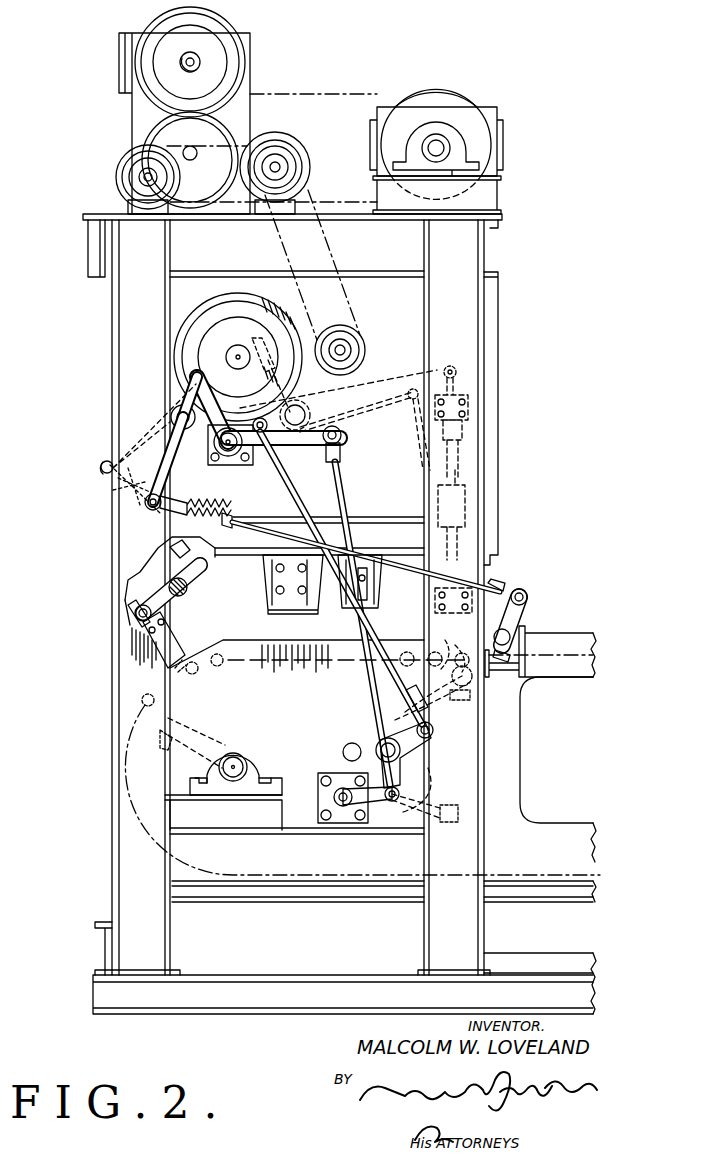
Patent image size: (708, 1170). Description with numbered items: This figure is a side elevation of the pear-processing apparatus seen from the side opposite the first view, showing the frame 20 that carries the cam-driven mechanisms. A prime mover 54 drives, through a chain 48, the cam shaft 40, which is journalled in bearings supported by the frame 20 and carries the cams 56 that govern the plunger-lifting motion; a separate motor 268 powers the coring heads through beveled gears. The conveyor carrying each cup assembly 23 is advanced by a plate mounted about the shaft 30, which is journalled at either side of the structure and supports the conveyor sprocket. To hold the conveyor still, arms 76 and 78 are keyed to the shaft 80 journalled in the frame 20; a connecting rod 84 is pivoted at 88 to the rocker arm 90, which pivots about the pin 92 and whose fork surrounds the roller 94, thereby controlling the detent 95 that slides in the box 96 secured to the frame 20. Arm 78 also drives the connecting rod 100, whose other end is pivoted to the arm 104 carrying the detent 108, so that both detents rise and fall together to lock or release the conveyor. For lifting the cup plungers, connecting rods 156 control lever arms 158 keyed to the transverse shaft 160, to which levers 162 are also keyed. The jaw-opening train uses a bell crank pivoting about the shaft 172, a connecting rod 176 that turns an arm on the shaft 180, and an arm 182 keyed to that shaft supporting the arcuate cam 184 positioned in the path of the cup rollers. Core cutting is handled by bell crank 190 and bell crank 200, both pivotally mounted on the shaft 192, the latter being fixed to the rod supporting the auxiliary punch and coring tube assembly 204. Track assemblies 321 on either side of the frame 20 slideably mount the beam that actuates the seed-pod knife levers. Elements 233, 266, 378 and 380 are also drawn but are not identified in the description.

The frame 20 is at (108, 886).
The cup assembly 23 is at (127, 808).
The shaft 30 is at (240, 764).
The shaft 40 is at (240, 352).
The chain 48 is at (352, 93).
The prime mover 54 is at (130, 58).
The cams 56 is at (216, 305).
The arm 76 is at (143, 435).
The arm 78 is at (168, 462).
The shaft 80 is at (175, 405).
The connecting rod 84 is at (155, 537).
The pivot 88 is at (205, 567).
The rocker arm 90 is at (190, 578).
The pin 92 is at (180, 594).
The roller 94 is at (138, 614).
The detent 95 is at (180, 678).
The box 96 is at (170, 640).
The connecting rod 100 is at (262, 525).
The arm 104 is at (525, 612).
The detent 108 is at (460, 636).
The connecting rods 156 is at (368, 686).
The lever arms 158 is at (375, 800).
The rotatable shaft 160 is at (343, 810).
The levers 162 is at (425, 776).
The shaft 172 is at (228, 458).
The connecting rod 176 is at (292, 474).
The shaft 180 is at (380, 745).
The arm 182 is at (432, 723).
The arcuate cam 184 is at (462, 676).
The bell crank 190 is at (372, 384).
The shaft 192 is at (300, 405).
The bell crank 200 is at (378, 418).
The auxiliary punch and coring tube assembly 204 is at (467, 507).
The bracket 233 is at (378, 607).
The pulley 266 is at (345, 348).
The motor 268 is at (118, 171).
The track assemblies 321 is at (290, 605).
The link 378 is at (195, 737).
The link 380 is at (175, 717).